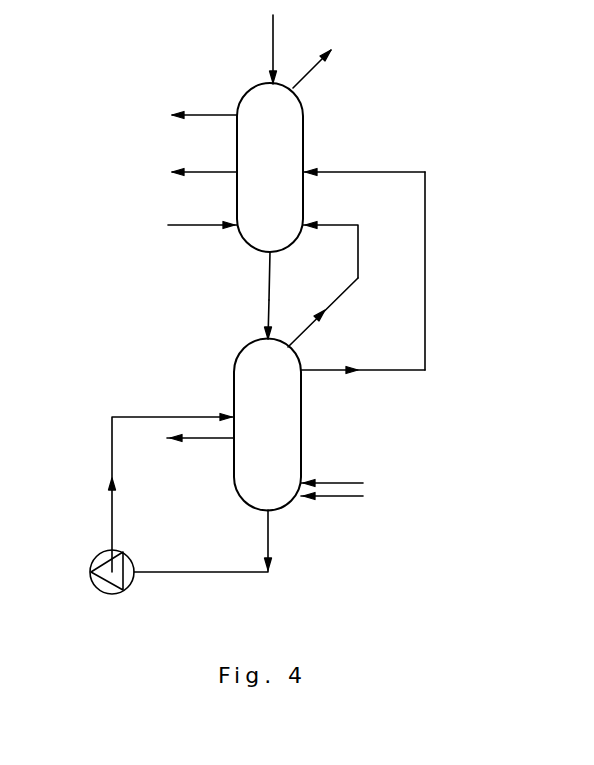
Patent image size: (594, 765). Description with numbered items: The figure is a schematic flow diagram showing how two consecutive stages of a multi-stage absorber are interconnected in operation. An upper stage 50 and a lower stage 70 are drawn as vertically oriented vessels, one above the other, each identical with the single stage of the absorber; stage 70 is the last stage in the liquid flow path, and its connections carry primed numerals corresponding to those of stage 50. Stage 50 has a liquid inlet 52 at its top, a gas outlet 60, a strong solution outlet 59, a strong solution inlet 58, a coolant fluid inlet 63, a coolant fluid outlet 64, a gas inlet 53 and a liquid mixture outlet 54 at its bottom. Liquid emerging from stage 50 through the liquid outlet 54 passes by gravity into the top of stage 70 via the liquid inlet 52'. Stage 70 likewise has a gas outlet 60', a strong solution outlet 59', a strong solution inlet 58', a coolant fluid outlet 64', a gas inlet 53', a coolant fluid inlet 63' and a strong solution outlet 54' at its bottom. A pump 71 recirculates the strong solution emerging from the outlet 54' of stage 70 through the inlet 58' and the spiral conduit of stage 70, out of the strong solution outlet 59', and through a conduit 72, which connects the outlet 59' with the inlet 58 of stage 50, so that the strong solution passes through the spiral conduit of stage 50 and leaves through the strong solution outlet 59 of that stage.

The absorber stage 50 is at (290, 126).
The liquid inlet 52 is at (251, 49).
The gas inlet 53 is at (333, 236).
The liquid mixture outlet 54 is at (247, 276).
The strong solution inlet 58 is at (364, 157).
The strong solution outlet 59 is at (204, 99).
The gas outlet 60 is at (328, 69).
The coolant fluid inlet 63 is at (202, 211).
The coolant fluid outlet 64 is at (204, 157).
The absorber stage 70 is at (290, 434).
The pump 71 is at (127, 556).
The conduit 72 is at (427, 211).
The liquid inlet 52' is at (248, 319).
The gas inlet 53' is at (334, 472).
The strong solution outlet 54' is at (203, 541).
The strong solution inlet 58' is at (172, 473).
The strong solution outlet 59' is at (363, 392).
The gas outlet 60' is at (327, 312).
The coolant fluid inlet 63' is at (334, 513).
The coolant fluid outlet 64' is at (200, 458).